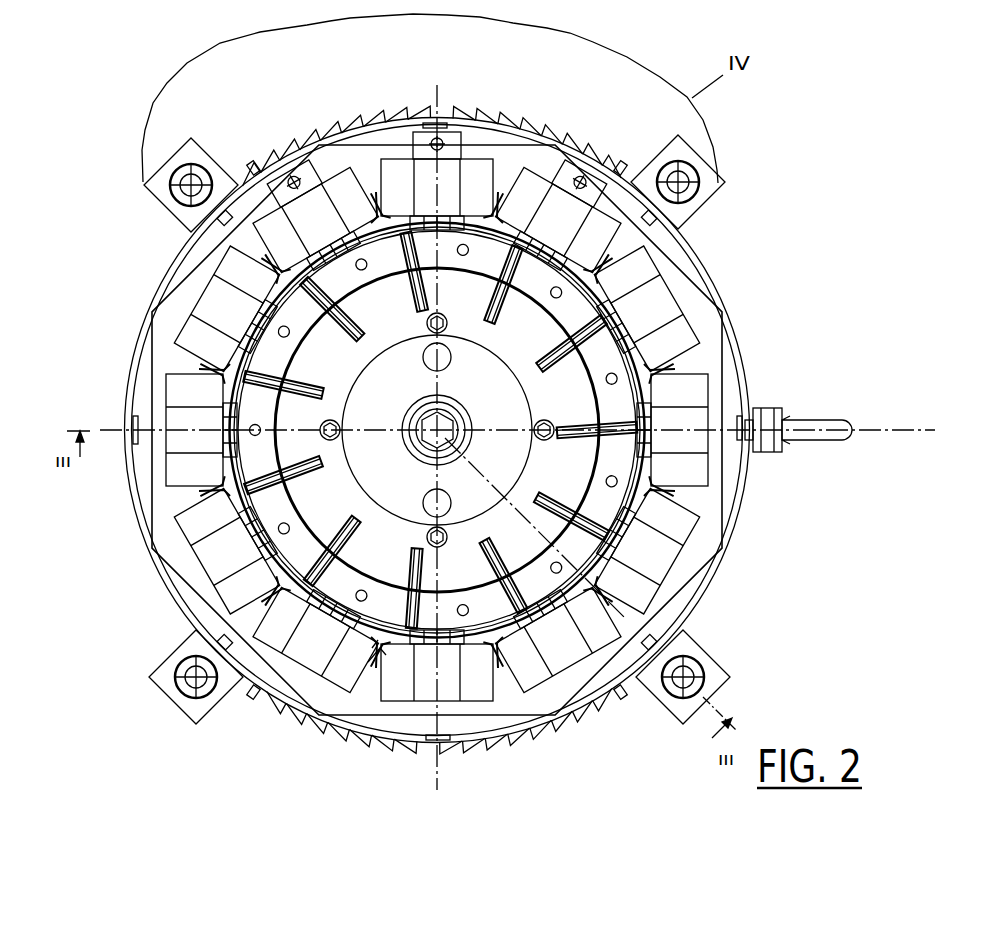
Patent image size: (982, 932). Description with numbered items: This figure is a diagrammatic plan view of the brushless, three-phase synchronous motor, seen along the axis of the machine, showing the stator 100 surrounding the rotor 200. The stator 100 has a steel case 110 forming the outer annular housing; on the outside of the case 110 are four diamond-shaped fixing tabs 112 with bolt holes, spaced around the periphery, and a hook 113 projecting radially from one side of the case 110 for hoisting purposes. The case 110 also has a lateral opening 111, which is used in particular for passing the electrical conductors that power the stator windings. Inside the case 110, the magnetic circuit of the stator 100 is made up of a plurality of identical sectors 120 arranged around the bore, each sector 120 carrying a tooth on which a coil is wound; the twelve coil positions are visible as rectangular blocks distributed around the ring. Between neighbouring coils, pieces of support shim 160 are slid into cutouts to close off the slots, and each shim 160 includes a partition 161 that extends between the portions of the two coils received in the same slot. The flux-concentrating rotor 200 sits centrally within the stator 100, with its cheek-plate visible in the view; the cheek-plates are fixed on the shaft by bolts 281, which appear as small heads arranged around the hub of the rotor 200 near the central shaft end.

The stator 100 is at (150, 352).
The case 110 is at (137, 494).
The lateral opening 111 is at (322, 132).
The fixing tabs 112 is at (153, 200).
The hook 113 is at (817, 432).
The sectors 120 is at (367, 717).
The support shim 160 is at (401, 645).
The partitions 161 is at (373, 662).
The rotor 200 is at (327, 498).
The bolts 281 is at (332, 420).